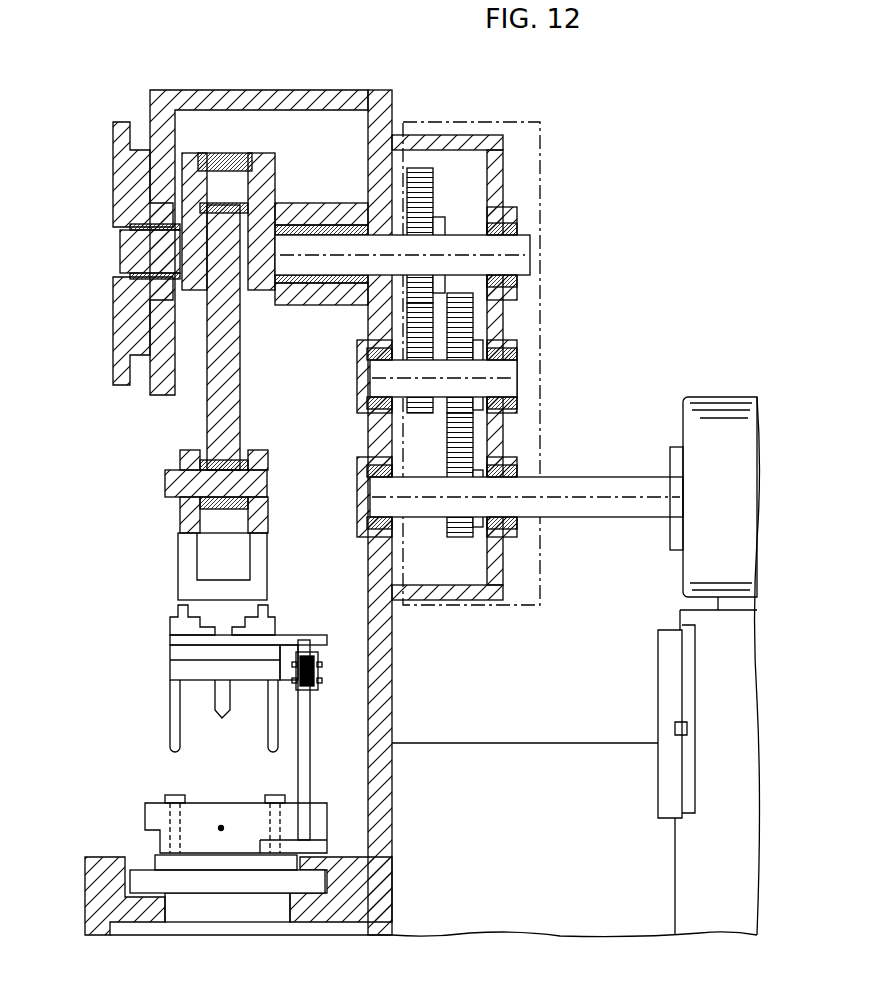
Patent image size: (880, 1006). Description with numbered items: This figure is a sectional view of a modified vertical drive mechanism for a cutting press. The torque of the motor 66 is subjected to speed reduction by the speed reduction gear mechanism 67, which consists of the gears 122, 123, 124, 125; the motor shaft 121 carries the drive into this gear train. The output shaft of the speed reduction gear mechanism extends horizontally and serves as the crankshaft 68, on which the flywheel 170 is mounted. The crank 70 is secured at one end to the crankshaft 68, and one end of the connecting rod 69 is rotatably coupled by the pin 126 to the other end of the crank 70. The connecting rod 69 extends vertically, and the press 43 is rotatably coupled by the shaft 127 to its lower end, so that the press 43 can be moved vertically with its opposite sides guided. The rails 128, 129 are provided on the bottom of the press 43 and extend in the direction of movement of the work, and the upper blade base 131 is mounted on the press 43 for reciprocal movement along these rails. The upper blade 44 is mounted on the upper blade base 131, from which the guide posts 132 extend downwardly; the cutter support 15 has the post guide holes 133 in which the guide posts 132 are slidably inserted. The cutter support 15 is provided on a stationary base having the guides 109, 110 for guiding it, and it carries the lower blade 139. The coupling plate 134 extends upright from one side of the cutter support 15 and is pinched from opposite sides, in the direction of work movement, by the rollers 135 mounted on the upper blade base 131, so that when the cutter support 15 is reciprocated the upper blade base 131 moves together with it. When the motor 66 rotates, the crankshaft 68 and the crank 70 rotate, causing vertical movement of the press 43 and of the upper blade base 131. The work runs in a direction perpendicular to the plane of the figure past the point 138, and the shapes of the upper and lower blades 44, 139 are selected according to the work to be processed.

The cutter support 15 is at (308, 888).
The press 43 is at (266, 538).
The upper blade 44 is at (218, 710).
The motor 66 is at (720, 417).
The speed reduction gear mechanism 67 is at (542, 197).
The crankshaft 68 is at (343, 262).
The connecting rod 69 is at (236, 382).
The crank 70 is at (262, 195).
The guide 109 is at (105, 887).
The guide 110 is at (385, 882).
The motor shaft 121 is at (626, 488).
The gear 122 is at (458, 537).
The gear 123 is at (468, 328).
The gear 124 is at (421, 415).
The gear 125 is at (432, 197).
The pin 126 is at (221, 180).
The shaft 127 is at (262, 485).
The rail 128 is at (178, 628).
The rail 129 is at (270, 627).
The upper blade base 131 is at (182, 665).
The guide post 132 is at (170, 722).
The post guide hole 133 is at (172, 798).
The coupling plate 134 is at (309, 768).
The roller 135 is at (306, 690).
The point 138 is at (221, 826).
The lower blade 139 is at (205, 830).
The flywheel 170 is at (113, 132).